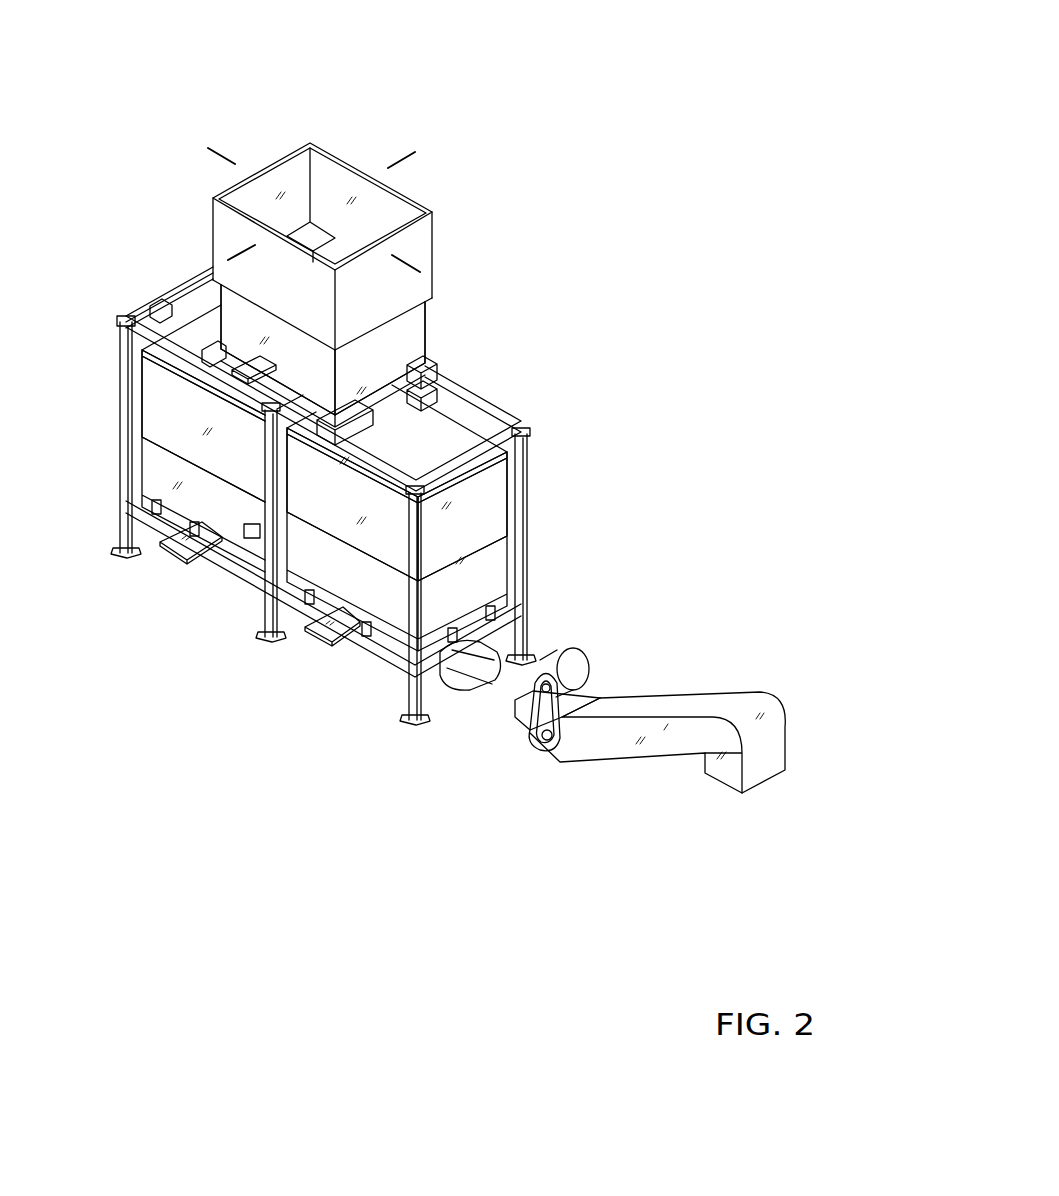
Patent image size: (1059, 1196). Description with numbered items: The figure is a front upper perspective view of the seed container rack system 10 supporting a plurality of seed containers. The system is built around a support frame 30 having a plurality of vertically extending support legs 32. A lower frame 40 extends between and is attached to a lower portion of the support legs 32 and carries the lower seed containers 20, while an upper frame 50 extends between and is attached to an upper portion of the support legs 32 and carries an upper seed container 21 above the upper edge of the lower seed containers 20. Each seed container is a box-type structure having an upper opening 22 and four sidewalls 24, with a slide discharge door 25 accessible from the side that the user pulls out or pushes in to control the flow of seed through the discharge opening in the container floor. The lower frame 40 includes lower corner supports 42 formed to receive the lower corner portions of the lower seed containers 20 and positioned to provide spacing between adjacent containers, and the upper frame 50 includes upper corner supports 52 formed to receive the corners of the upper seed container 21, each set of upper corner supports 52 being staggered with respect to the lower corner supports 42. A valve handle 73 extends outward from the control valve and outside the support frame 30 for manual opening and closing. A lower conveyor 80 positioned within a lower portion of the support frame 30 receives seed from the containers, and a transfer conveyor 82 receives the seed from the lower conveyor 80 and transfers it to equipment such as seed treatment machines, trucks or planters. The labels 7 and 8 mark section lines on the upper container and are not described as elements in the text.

The seed container rack system 10 is at (611, 123).
The section line 7 is at (388, 149).
The section line 8 is at (235, 149).
The lower seed container 20 is at (176, 455).
The upper seed container 21 is at (432, 331).
The upper opening 22 is at (426, 196).
The sidewalls 24 is at (385, 291).
The slide discharge door 25 is at (246, 372).
The support frame 30 is at (541, 467).
The support legs 32 is at (120, 531).
The lower frame 40 is at (373, 668).
The lower corner supports 42 is at (142, 490).
The upper frame 50 is at (516, 413).
The upper corner supports 52 is at (160, 340).
The valve handle 73 is at (248, 538).
The lower conveyor 80 is at (473, 685).
The transfer conveyor 82 is at (697, 693).